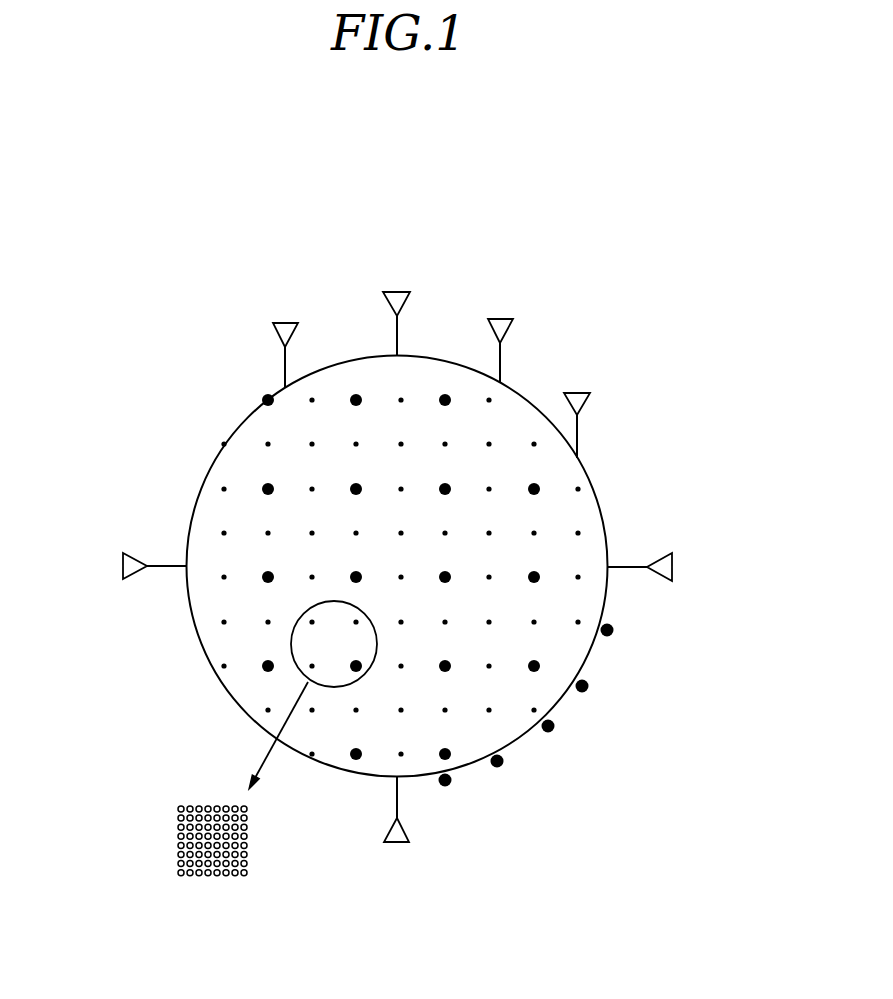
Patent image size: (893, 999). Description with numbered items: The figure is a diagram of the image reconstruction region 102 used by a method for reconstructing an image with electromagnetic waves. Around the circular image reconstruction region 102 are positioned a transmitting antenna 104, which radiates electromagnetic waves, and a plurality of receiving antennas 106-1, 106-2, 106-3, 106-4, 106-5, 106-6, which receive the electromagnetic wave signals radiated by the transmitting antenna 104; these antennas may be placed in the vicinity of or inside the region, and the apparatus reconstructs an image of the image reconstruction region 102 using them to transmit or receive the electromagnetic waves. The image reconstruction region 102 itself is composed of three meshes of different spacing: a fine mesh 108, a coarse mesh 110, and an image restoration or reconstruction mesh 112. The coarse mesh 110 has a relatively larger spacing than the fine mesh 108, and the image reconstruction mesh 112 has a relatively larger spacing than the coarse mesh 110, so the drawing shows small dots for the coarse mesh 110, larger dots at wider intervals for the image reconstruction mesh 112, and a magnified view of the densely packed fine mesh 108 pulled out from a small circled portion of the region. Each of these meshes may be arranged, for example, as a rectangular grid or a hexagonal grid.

The image reconstruction region 102 is at (203, 484).
The transmitting antenna 104 is at (122, 567).
The receiving antenna 106-1 is at (289, 323).
The receiving antenna 106-2 is at (398, 292).
The receiving antenna 106-3 is at (502, 319).
The receiving antenna 106-4 is at (579, 393).
The receiving antenna 106-5 is at (674, 563).
The receiving antenna 106-6 is at (393, 845).
The fine mesh 108 is at (180, 812).
The coarse mesh 110 is at (264, 716).
The image reconstruction mesh 112 is at (262, 672).